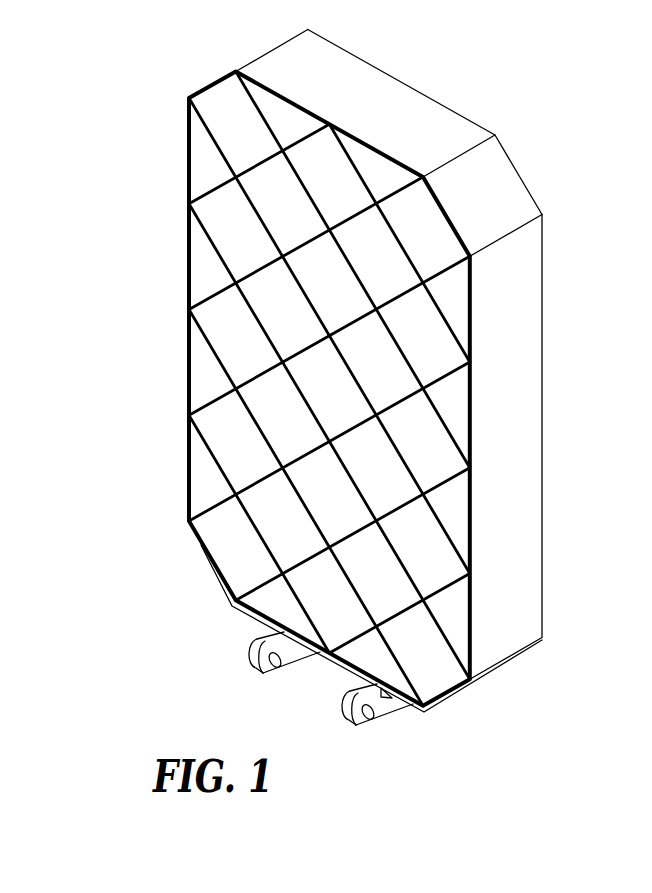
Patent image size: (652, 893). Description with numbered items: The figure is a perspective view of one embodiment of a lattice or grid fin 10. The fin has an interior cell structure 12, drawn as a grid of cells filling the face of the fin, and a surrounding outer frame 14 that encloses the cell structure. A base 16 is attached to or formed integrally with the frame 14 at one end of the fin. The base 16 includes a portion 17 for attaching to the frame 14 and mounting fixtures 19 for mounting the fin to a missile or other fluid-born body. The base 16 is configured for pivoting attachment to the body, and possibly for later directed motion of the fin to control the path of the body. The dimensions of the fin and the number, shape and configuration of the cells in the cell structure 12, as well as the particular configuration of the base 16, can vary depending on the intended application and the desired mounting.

The lattice fin 10 is at (394, 396).
The interior cell structure 12 is at (447, 420).
The outer frame 14 is at (523, 584).
The base 16 is at (258, 643).
The portion for attaching to the frame 17 is at (441, 704).
The mounting fixtures 19 is at (380, 714).